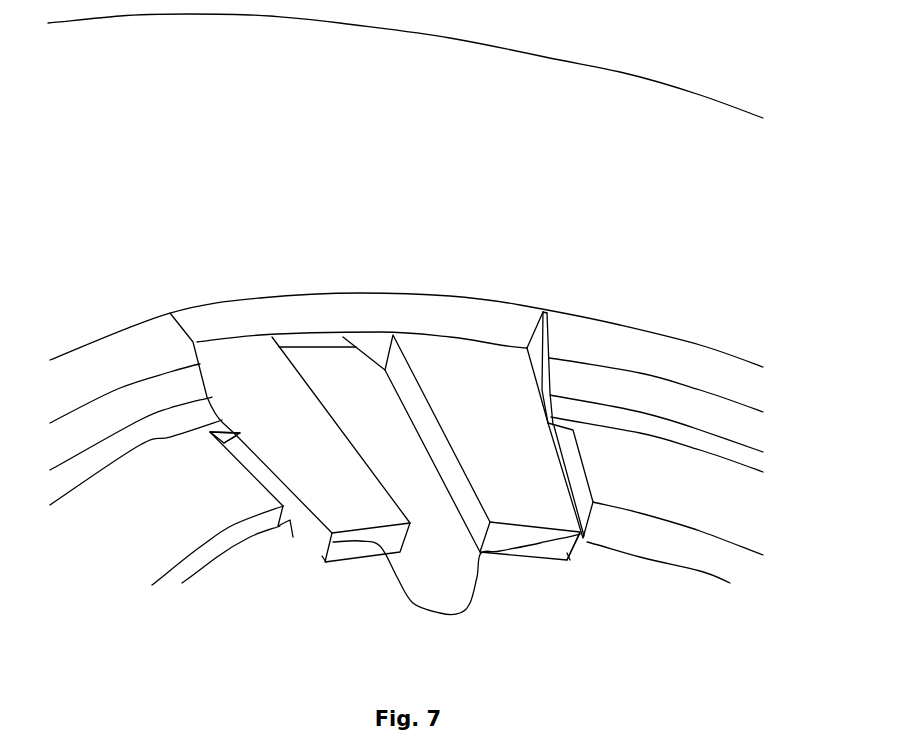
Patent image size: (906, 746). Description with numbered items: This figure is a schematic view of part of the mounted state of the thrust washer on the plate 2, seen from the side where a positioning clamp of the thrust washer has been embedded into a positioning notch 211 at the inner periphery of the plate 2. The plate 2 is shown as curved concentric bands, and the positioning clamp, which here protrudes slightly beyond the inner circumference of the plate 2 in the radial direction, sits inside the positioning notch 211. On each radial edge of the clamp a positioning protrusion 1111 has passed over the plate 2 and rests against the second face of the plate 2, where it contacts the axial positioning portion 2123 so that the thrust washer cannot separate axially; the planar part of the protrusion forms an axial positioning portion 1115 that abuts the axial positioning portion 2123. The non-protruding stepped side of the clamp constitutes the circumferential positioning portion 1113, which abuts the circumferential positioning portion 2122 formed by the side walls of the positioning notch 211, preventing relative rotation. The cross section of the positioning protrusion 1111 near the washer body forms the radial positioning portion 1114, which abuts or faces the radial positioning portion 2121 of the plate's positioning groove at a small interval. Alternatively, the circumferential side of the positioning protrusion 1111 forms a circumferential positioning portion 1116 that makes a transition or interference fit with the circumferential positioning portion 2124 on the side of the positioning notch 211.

The plate 2 is at (498, 90).
The positioning notch 211 is at (352, 390).
The positioning protrusion 1111 is at (456, 592).
The circumferential positioning portion 1113 is at (570, 553).
The radial positioning portion 1114 is at (550, 433).
The axial positioning portion 1115 is at (570, 550).
The circumferential positioning portion 1116 is at (593, 510).
The radial positioning portion 2121 is at (577, 428).
The circumferential positioning portion 2122 is at (290, 531).
The axial positioning portion 2123 is at (285, 522).
The circumferential positioning portion 2124 is at (577, 470).